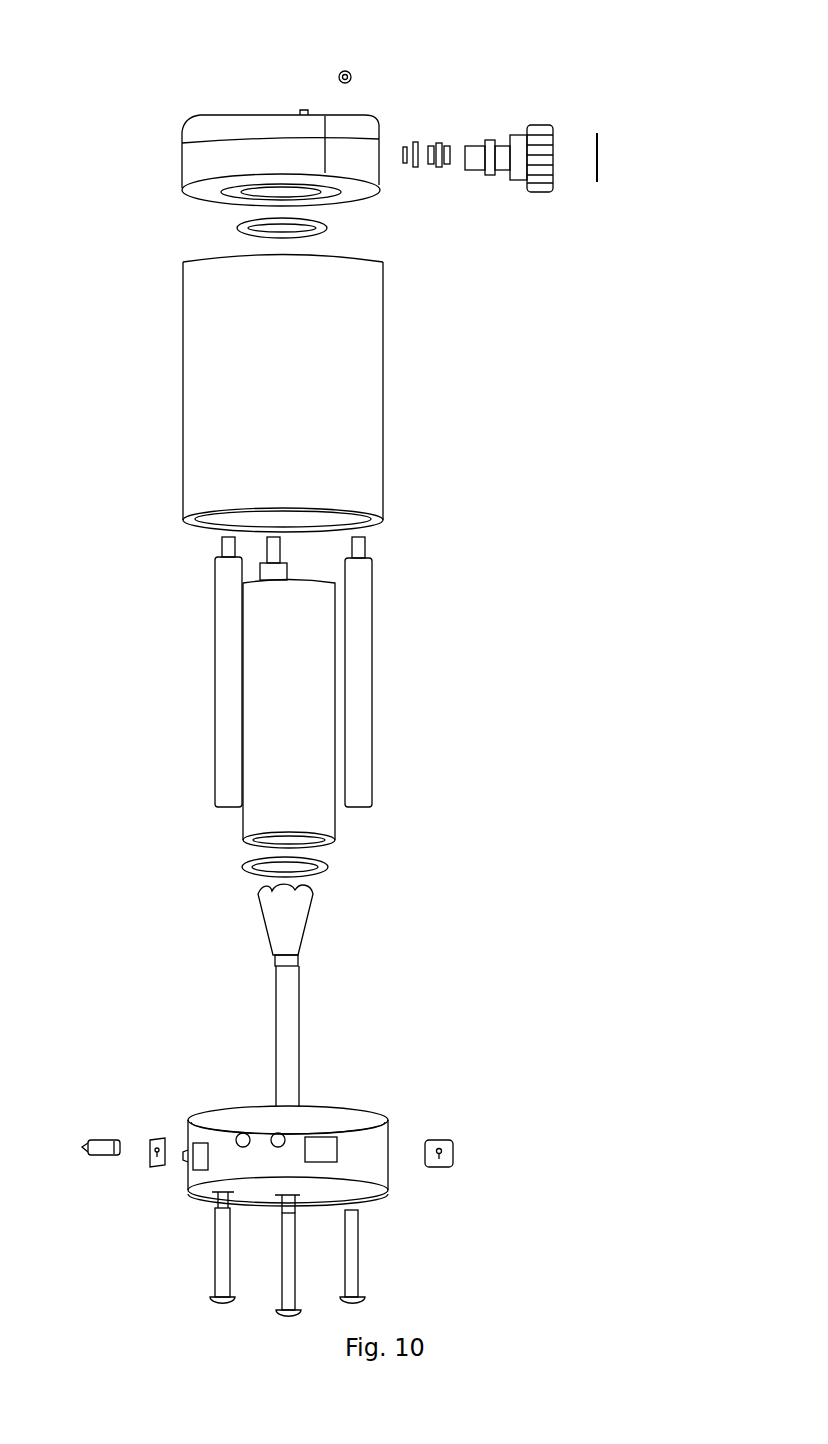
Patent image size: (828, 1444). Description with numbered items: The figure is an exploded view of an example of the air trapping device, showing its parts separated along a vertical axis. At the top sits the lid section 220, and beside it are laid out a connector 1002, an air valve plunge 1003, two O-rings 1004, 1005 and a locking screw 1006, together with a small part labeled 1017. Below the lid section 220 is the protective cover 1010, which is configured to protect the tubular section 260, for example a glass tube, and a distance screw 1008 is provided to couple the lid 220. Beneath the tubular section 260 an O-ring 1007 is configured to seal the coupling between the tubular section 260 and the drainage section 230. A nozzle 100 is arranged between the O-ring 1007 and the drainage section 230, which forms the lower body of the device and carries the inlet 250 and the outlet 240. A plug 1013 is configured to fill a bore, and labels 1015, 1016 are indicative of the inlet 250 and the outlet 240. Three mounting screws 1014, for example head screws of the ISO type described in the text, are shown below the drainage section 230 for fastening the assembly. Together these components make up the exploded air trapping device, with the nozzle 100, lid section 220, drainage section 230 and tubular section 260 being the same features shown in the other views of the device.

The nozzle 100 is at (312, 947).
The lid section 220 is at (183, 134).
The drainage section 230 is at (375, 1112).
The outlet 240 is at (215, 1212).
The inlet 250 is at (287, 1216).
The tubular section 260 is at (235, 836).
The connector 1002 is at (562, 128).
The air valve plunge 1003 is at (452, 157).
The O-ring 1004 is at (404, 145).
The O-ring 1005 is at (420, 141).
The locking screw 1006 is at (338, 70).
The O-ring 1007 is at (300, 868).
The distance screw 1008 is at (216, 650).
The protective cover 1010 is at (182, 381).
The plug 1013 is at (108, 1158).
The mounting screw 1014 is at (362, 1272).
The label 1015 is at (462, 1153).
The label 1016 is at (156, 1133).
The pin 1017 is at (600, 161).